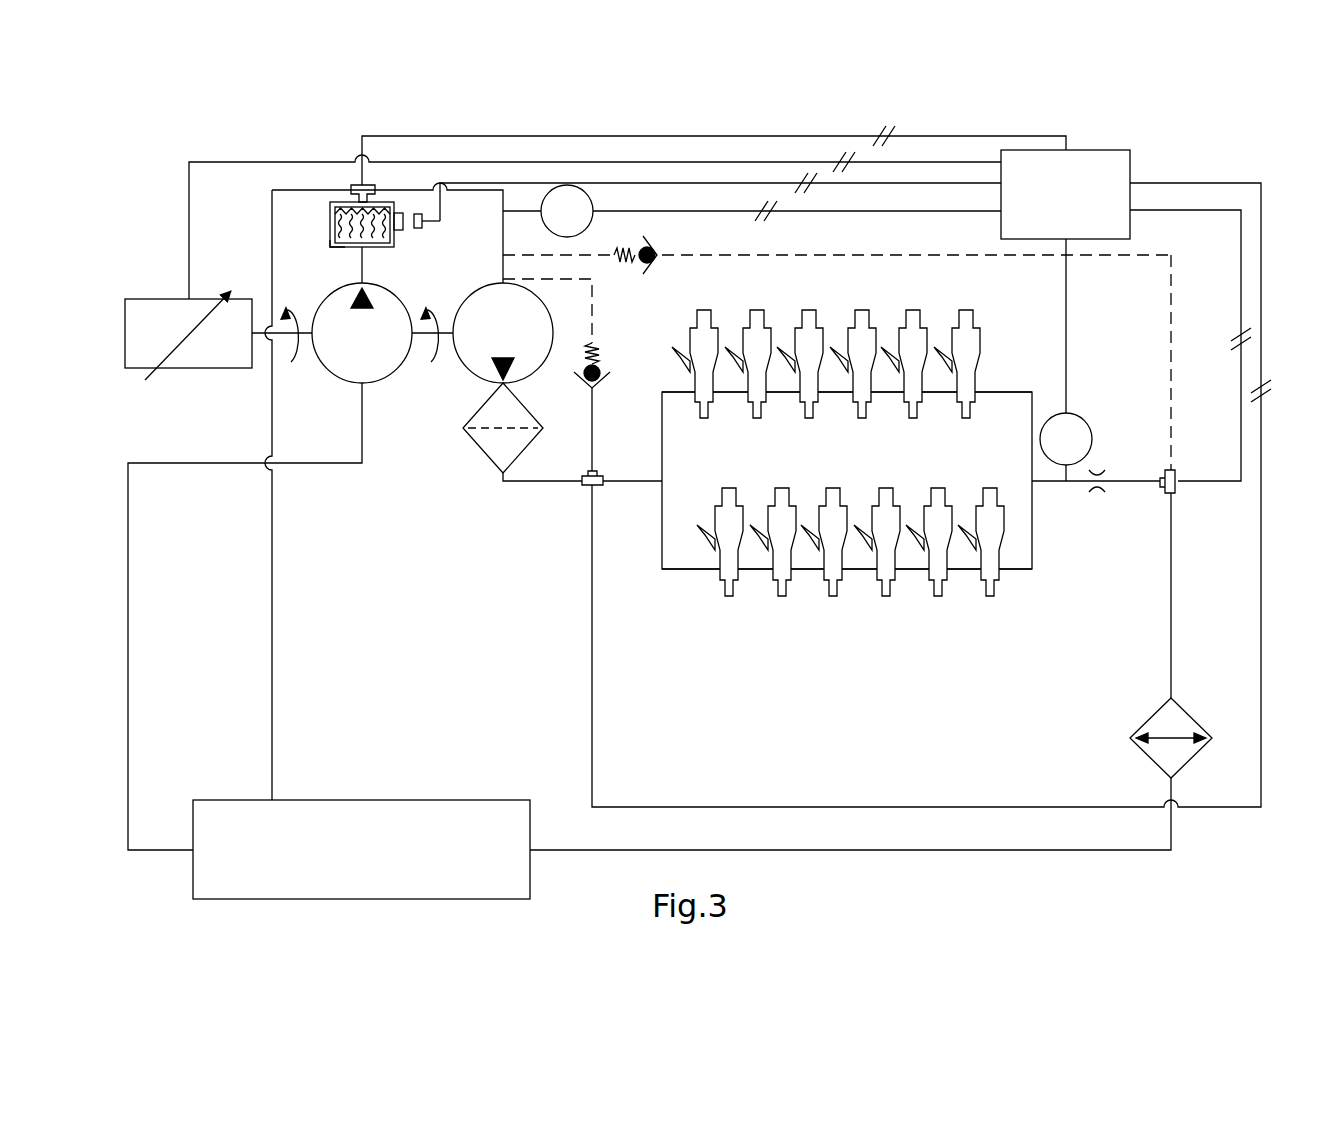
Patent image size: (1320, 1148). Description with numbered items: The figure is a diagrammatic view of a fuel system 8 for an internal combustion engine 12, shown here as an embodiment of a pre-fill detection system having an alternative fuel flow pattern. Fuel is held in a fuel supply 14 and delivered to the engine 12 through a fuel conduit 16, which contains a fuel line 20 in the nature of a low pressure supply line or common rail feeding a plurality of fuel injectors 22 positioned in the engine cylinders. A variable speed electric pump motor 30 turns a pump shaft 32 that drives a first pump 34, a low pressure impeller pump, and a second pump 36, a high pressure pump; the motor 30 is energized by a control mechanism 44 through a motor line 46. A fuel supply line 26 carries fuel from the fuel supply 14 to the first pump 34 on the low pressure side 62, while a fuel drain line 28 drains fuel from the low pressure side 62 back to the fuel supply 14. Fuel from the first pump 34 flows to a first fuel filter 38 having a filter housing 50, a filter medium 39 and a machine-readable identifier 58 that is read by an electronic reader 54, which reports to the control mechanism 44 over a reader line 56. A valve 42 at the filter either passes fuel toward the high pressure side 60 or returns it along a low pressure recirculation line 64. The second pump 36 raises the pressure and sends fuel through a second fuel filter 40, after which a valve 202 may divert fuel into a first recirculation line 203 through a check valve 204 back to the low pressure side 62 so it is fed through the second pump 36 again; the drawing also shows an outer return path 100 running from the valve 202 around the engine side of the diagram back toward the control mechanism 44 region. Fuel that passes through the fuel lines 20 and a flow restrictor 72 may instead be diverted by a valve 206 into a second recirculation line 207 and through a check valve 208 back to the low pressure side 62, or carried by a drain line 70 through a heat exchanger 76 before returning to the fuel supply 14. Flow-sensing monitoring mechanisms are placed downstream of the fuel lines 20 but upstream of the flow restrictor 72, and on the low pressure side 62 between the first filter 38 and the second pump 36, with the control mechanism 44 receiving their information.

The fuel system 8 is at (958, 122).
The internal combustion engine 12 is at (1006, 374).
The fuel supply 14 is at (482, 798).
The fuel conduit 16 is at (650, 468).
The fuel line 20 is at (936, 392).
The fuel injectors 22 is at (864, 418).
The fuel supply line 26 is at (128, 766).
The fuel drain line 28 is at (270, 714).
The pump motor 30 is at (186, 368).
The pump shaft 32 is at (450, 342).
The first pump 34 is at (330, 368).
The second pump 36 is at (464, 292).
The first fuel filter 38 is at (328, 232).
The filter medium 39 is at (351, 247).
The second fuel filter 40 is at (524, 408).
The valve 42 is at (375, 190).
The control mechanism 44 is at (1130, 157).
The motor line 46 is at (561, 136).
The filter housing 50 is at (330, 246).
The electronic reader 54 is at (422, 224).
The reader line 56 is at (530, 184).
The machine-readable identifier 58 is at (402, 232).
The high pressure side 60 is at (540, 492).
The low pressure side 62 is at (420, 396).
The low pressure recirculation line 64 is at (272, 192).
The drain line 70 is at (1172, 555).
The flow restrictor 72 is at (1098, 470).
The heat exchanger 76 is at (1200, 728).
The bypass loop 100 is at (1282, 432).
The valve 202 is at (596, 486).
The first recirculation line 203 is at (594, 300).
The check valve 204 is at (608, 383).
The valve 206 is at (1178, 469).
The second recirculation line 207 is at (1173, 297).
The check valve 208 is at (656, 242).